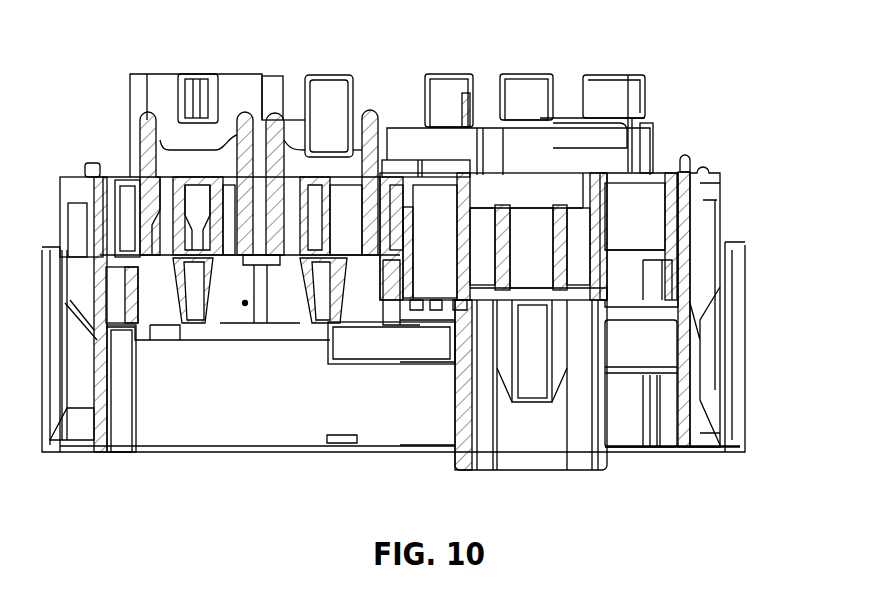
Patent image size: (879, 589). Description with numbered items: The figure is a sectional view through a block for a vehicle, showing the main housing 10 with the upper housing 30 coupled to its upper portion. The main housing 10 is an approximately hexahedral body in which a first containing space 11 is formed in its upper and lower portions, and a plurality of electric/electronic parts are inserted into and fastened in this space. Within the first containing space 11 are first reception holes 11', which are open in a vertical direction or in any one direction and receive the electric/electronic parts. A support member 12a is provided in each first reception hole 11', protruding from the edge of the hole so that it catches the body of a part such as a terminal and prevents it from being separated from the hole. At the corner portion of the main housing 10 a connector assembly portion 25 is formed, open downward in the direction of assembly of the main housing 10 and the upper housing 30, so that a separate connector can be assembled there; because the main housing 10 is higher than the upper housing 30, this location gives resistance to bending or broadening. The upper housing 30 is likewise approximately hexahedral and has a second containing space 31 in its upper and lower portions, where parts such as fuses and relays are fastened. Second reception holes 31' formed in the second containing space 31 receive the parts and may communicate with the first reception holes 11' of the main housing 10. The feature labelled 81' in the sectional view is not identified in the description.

The main housing 10 is at (745, 398).
The first containing space 11 is at (71, 314).
The first reception holes 11' is at (355, 351).
The support member 12a is at (190, 322).
The connector assembly portion 25 is at (448, 438).
The upper housing 30 is at (655, 95).
The second containing space 31 is at (328, 129).
The second reception holes 31' is at (121, 153).
The tubular portion 81' is at (510, 341).